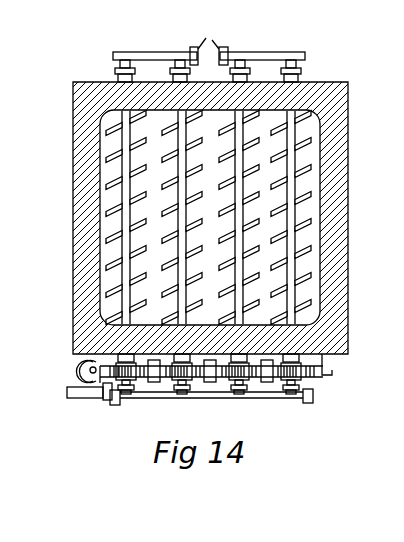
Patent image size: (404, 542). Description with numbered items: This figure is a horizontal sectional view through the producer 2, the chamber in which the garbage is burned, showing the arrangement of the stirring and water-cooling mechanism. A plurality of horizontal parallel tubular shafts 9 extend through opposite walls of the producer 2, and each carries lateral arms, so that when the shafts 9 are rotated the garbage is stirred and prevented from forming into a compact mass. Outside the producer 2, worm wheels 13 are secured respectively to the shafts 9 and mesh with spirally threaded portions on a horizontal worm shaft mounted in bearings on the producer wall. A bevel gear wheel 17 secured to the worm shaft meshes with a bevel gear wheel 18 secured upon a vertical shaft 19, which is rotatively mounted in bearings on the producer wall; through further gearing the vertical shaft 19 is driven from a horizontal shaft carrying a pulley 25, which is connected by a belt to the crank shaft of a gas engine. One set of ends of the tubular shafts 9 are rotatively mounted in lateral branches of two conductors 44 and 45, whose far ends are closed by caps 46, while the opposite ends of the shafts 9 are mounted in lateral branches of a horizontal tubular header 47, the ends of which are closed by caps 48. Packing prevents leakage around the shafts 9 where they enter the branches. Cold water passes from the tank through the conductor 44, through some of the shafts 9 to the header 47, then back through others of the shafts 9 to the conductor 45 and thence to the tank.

The producer 2 is at (73, 233).
The tubular shafts 9 is at (133, 232).
The worm wheels 13 is at (180, 388).
The bevel gear wheel 17 is at (105, 399).
The bevel gear wheel 18 is at (73, 373).
The vertical shaft 19 is at (62, 384).
The pulley 25 is at (80, 398).
The conductor 44 is at (157, 55).
The conductor 45 is at (259, 55).
The caps 46 is at (210, 40).
The tubular header 47 is at (214, 398).
The caps 48 is at (115, 405).